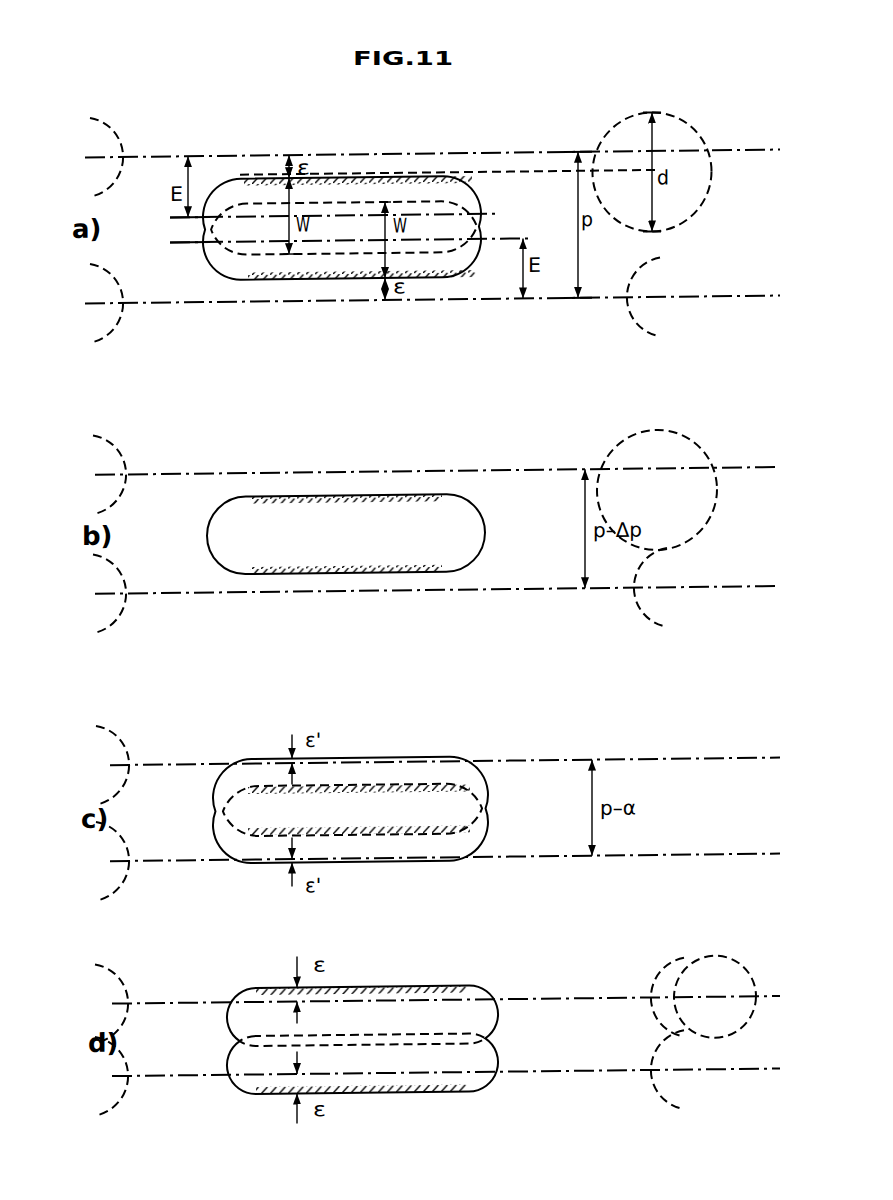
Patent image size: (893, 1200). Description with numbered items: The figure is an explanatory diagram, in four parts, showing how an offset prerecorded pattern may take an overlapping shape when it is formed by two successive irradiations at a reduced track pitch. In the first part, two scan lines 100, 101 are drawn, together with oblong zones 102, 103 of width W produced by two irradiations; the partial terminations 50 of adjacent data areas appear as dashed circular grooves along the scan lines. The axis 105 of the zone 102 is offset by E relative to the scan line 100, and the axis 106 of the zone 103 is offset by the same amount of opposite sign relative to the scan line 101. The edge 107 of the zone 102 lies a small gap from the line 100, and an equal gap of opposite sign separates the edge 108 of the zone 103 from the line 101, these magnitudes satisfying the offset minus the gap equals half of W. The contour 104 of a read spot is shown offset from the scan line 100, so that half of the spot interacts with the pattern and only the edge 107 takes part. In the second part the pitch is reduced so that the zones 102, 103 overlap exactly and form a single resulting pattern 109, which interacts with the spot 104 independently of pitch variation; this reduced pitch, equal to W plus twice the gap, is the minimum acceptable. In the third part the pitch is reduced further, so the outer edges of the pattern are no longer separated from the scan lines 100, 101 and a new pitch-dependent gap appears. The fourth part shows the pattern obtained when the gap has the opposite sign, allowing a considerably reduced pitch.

The terminations 50 is at (126, 136).
The scan line 100 is at (436, 154).
The scan line 101 is at (230, 300).
The oblong zone 102 is at (479, 213).
The oblong zone 103 is at (474, 262).
The contour of a read spot 104 is at (700, 132).
The axis 105 is at (170, 214).
The axis 106 is at (170, 240).
The edge 107 is at (336, 176).
The edge 108 is at (322, 278).
The resulting pattern 109 is at (207, 536).